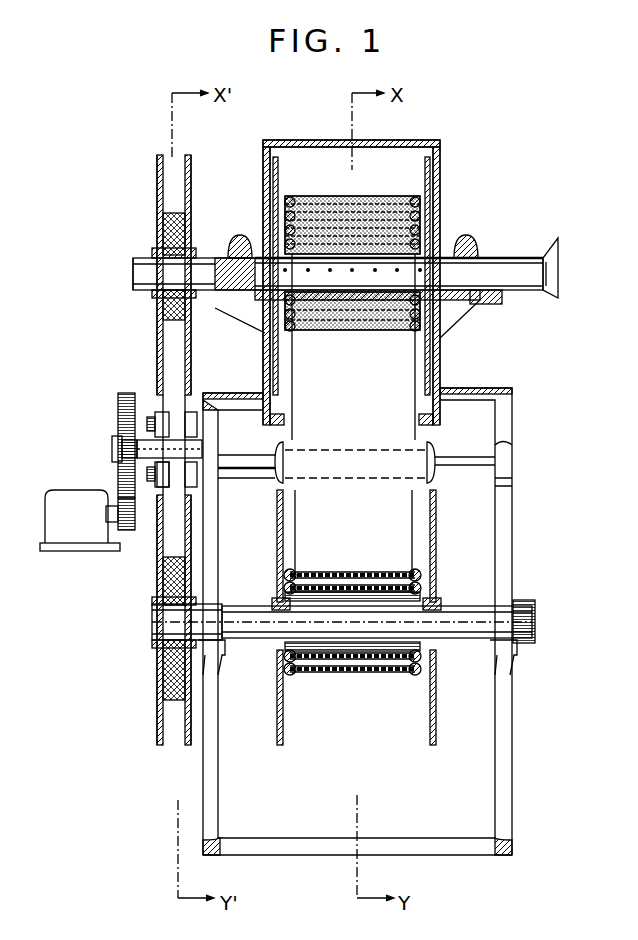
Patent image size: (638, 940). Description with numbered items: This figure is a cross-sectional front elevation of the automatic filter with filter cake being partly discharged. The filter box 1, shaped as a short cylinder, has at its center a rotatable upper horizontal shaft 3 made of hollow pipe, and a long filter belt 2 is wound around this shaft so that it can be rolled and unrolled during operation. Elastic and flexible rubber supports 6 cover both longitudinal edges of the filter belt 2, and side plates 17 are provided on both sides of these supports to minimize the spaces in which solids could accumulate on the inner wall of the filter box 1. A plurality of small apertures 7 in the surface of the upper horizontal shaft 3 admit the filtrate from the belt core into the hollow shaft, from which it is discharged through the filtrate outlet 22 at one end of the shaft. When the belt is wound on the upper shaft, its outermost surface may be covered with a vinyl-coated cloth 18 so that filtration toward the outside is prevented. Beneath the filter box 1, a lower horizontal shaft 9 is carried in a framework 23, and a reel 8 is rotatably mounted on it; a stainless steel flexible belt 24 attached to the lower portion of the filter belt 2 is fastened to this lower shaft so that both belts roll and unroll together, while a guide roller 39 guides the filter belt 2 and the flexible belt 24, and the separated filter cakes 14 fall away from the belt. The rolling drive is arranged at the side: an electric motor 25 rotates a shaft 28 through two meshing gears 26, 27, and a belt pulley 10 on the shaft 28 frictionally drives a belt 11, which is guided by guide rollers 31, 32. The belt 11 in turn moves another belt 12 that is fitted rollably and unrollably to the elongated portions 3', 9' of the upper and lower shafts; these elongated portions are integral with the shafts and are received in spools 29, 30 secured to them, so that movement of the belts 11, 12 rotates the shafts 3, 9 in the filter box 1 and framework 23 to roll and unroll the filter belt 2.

The filter box 1 is at (352, 260).
The filter belt 2 is at (314, 202).
The upper horizontal shaft 3 is at (338, 275).
The elongated portion of the upper horizontal shaft 3' is at (113, 270).
The elastic and flexible supports 6 is at (428, 205).
The small apertures 7 is at (238, 278).
The reel 8 is at (436, 528).
The lower horizontal shaft 9 is at (342, 642).
The elongated portion of the lower horizontal shaft 9' is at (335, 621).
The belt pulley 10 is at (158, 442).
The belt 11 is at (166, 220).
The belt 12 is at (158, 238).
The filter cakes 14 is at (378, 202).
The side plates 17 is at (278, 165).
The cloth 18 is at (345, 674).
The filtrate outlet 22 is at (558, 262).
The framework 23 is at (512, 430).
The flexible belt 24 is at (356, 592).
The electric motor 25 is at (52, 500).
The gear 26 is at (128, 530).
The gear 27 is at (118, 474).
The shaft 28 is at (112, 449).
The spool 29 is at (191, 168).
The spool 30 is at (160, 735).
The guide roller 31 is at (160, 418).
The guide roller 32 is at (160, 492).
The guide roller 39 is at (278, 452).